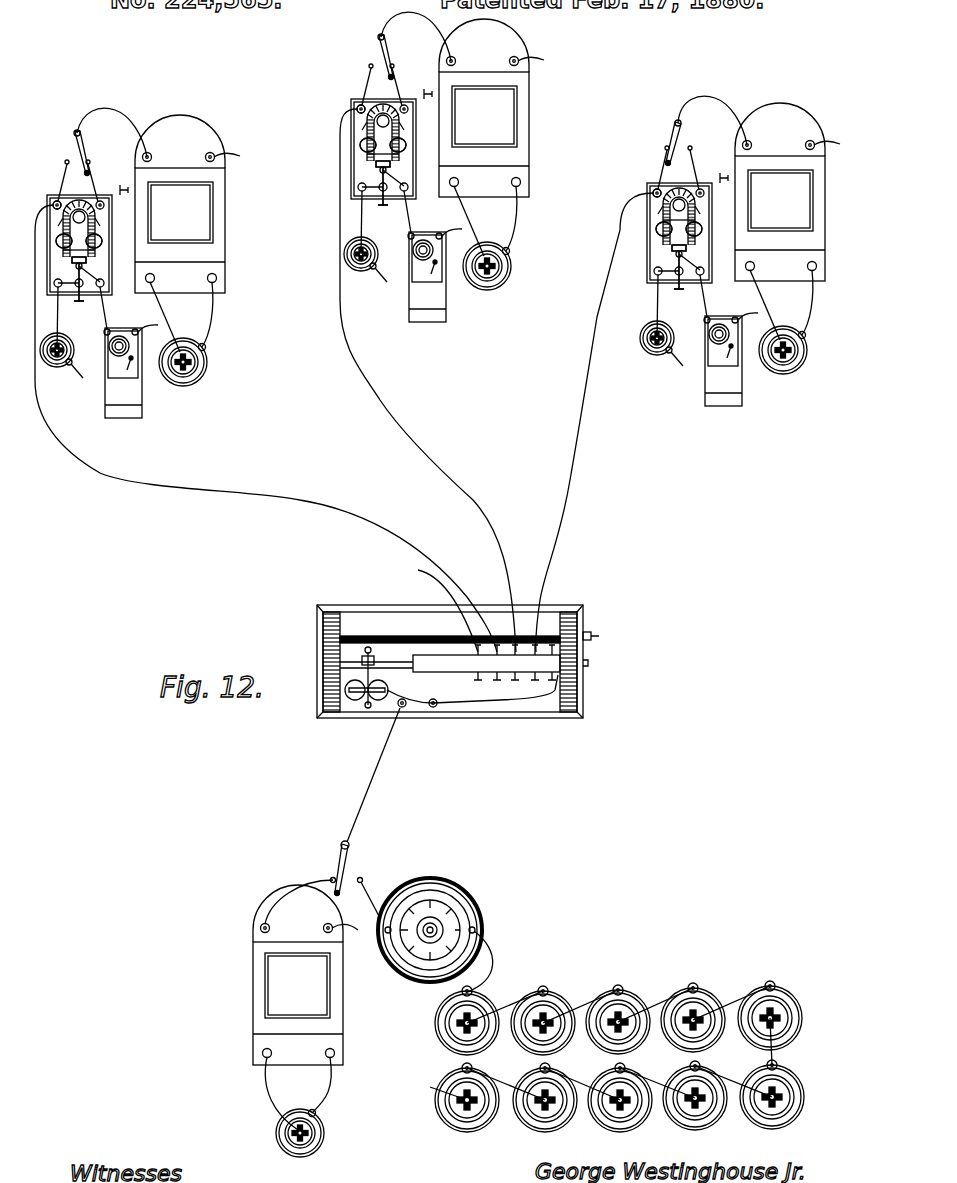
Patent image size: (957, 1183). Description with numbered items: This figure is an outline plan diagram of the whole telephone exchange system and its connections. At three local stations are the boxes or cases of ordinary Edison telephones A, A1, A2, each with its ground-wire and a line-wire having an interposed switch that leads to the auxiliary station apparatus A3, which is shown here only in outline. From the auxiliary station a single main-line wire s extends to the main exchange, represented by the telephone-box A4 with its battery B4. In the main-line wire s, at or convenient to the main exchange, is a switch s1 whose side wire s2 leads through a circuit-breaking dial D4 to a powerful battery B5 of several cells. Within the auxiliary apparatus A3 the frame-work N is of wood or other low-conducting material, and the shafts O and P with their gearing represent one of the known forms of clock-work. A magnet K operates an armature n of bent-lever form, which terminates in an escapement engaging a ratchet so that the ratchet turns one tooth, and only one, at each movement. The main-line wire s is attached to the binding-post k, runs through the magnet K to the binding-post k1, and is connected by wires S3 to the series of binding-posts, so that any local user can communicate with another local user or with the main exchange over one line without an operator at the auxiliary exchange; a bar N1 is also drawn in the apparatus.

The telephone box A is at (772, 192).
The telephone box A1 is at (476, 108).
The telephone box A2 is at (172, 204).
The auxiliary station apparatus A3 is at (447, 661).
The main exchange telephone-box A4 is at (298, 975).
The battery B4 is at (309, 1133).
The powerful battery B5 is at (619, 1055).
The circuit-breaking dial D4 is at (435, 933).
The binding-post k is at (405, 716).
The binding-post k1 is at (440, 714).
The magnet K is at (373, 687).
The armature n is at (366, 708).
The frame-work N is at (376, 642).
The contact bar N1 is at (486, 662).
The shaft O is at (383, 675).
The shaft P is at (450, 632).
The main-line wire s is at (332, 816).
The switch s1 is at (337, 868).
The side wire s2 is at (371, 898).
The wires S3 is at (472, 692).